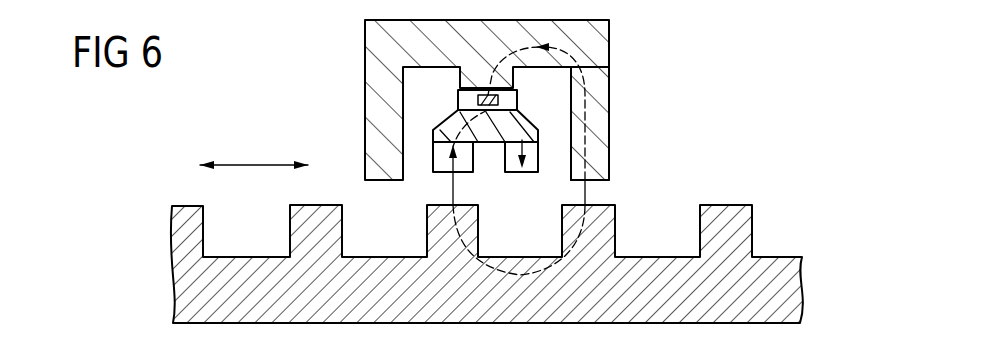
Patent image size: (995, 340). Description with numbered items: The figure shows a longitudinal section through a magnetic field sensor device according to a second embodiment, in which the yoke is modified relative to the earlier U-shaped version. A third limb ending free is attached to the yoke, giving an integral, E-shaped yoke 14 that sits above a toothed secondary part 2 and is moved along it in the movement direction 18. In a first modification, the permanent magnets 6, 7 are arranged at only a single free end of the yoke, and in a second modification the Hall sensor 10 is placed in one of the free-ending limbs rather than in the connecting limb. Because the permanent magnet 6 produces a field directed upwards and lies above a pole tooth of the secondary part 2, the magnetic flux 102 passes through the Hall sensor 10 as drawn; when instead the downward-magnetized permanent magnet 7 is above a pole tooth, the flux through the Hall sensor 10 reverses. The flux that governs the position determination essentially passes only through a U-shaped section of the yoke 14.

The secondary part 2 is at (635, 226).
The permanent magnet 6 is at (434, 163).
The permanent magnet 7 is at (510, 173).
The Hall sensor 10 is at (477, 104).
The E-shaped yoke 14 is at (609, 32).
The movement direction 18 is at (255, 165).
The magnetic flux 102 is at (602, 106).